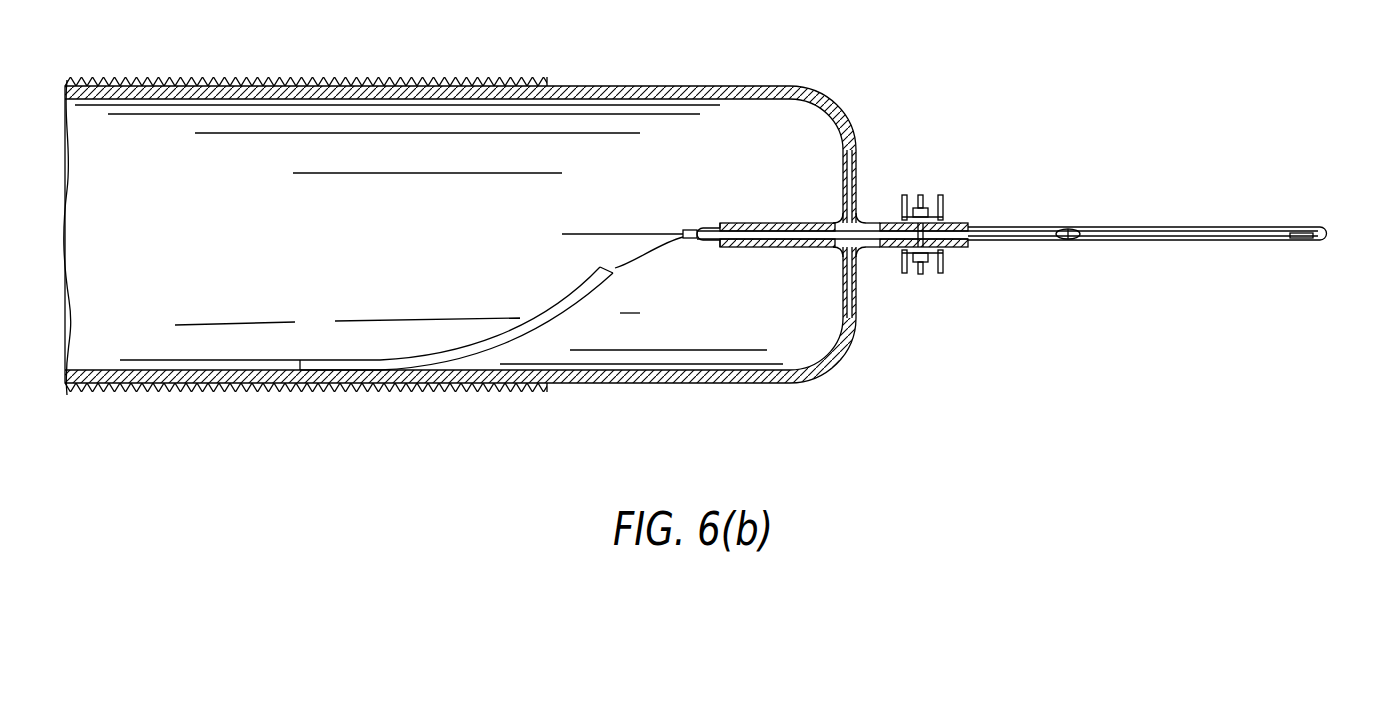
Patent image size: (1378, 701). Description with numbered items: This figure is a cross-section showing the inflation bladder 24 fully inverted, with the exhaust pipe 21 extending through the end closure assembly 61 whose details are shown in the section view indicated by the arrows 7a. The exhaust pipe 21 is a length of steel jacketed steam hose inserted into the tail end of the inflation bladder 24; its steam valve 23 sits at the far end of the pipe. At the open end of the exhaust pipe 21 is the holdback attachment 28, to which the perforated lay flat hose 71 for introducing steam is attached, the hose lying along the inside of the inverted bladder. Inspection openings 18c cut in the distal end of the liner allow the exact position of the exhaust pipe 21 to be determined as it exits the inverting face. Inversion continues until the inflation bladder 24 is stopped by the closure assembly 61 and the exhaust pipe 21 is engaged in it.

The inspection openings 18c is at (710, 88).
The exhaust pipe 21 is at (787, 222).
The steam valve 23 is at (1305, 230).
The inflation bladder 24 is at (845, 167).
The holdback attachment 28 is at (700, 227).
The end closure assembly 61 is at (924, 182).
The perforated lay flat hose 71 is at (327, 358).
The section line 7a is at (897, 226).